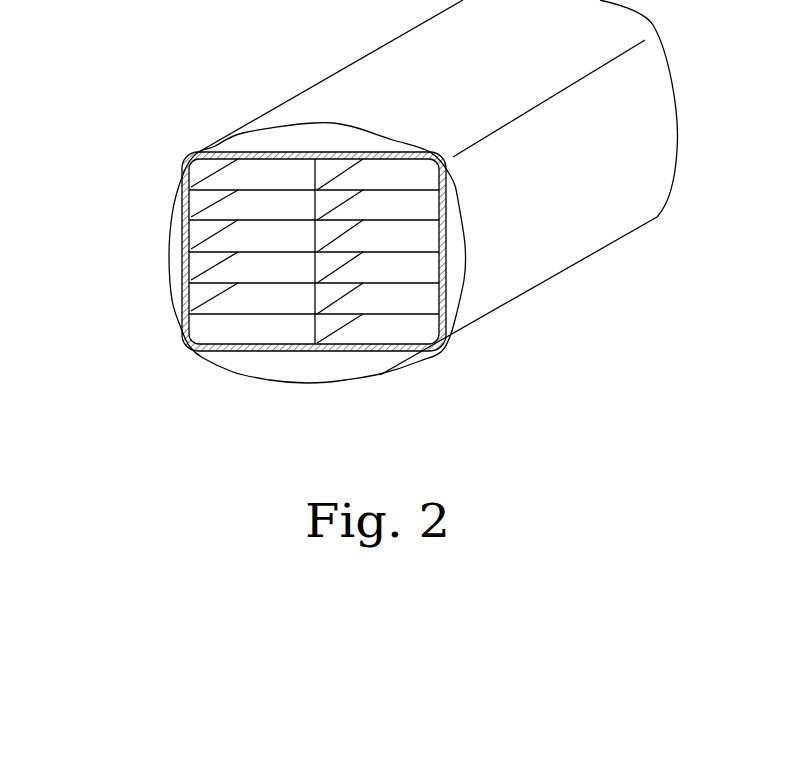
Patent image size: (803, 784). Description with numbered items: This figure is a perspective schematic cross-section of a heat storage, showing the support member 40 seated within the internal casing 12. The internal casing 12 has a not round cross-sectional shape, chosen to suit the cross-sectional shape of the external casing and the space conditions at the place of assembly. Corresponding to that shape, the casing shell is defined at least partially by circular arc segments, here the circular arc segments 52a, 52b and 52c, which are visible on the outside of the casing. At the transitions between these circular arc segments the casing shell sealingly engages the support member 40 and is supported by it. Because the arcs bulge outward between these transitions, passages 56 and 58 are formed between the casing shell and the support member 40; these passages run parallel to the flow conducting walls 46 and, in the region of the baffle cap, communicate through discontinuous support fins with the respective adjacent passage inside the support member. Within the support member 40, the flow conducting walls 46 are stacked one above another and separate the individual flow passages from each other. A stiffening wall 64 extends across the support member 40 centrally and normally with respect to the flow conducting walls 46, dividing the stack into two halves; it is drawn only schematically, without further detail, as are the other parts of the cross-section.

The internal casing 12 is at (168, 313).
The support member 40 is at (233, 352).
The flow conducting walls 46 is at (395, 283).
The circular arc segment 52a is at (478, 84).
The circular arc segment 52b is at (583, 187).
The circular arc segment 52c is at (168, 225).
The passage 56 is at (272, 365).
The passage 58 is at (270, 138).
The stiffening wall 64 is at (315, 330).